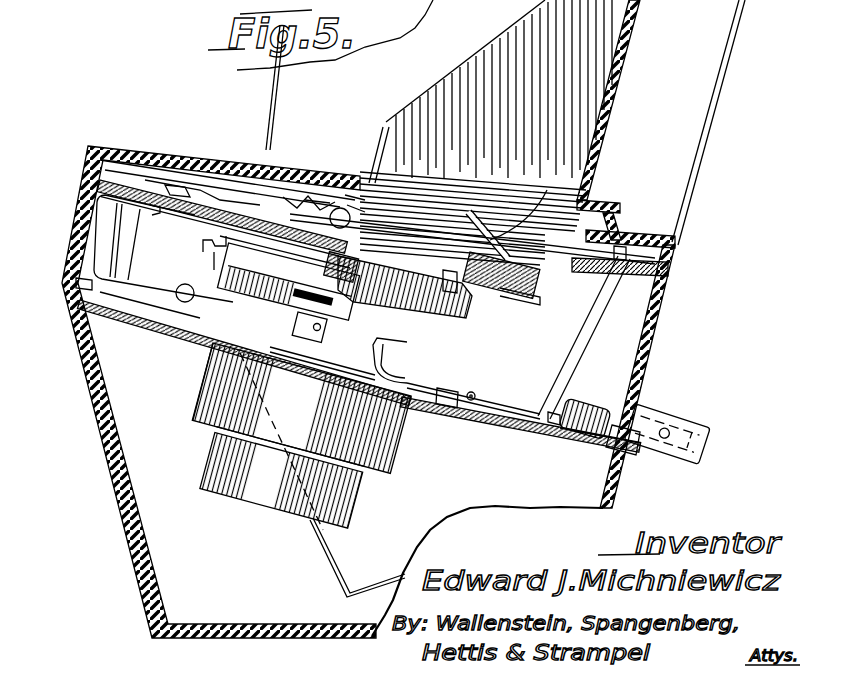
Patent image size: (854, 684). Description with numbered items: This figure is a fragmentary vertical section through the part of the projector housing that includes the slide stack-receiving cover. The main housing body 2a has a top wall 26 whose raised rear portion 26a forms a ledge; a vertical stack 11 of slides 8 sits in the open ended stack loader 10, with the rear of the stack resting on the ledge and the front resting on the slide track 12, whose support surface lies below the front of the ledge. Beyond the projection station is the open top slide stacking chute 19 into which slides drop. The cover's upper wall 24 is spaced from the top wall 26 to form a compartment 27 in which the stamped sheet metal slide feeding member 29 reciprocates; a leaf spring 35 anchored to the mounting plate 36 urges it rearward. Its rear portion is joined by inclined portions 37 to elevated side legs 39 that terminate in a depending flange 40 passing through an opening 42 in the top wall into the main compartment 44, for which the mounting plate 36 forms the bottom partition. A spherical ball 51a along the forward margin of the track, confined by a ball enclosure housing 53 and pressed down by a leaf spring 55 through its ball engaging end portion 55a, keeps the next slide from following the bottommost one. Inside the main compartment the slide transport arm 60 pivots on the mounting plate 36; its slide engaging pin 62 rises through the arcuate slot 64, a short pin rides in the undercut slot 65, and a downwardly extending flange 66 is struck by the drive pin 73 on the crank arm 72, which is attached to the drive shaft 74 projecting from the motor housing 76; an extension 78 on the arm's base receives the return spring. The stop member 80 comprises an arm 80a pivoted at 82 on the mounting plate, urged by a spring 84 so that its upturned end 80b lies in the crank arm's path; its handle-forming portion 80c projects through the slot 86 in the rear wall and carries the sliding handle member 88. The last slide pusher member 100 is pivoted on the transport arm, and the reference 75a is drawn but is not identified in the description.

The main housing body 2a is at (648, 369).
The slide 8 is at (529, 170).
The stack loader 10 is at (618, 97).
The vertical stack 11 is at (80, 170).
The slide track 12 is at (507, 300).
The slide stacking chute 19 is at (347, 560).
The upper wall 24 is at (264, 146).
The top wall 26 is at (226, 231).
The raised rear portion 26a is at (558, 280).
The compartment 27 is at (160, 175).
The slide feeding member 29 is at (621, 230).
The leaf spring 35 is at (582, 339).
The mounting plate 36 is at (168, 362).
The inclined portions 37 is at (549, 182).
The side legs 39 is at (235, 251).
The depending flange 40 is at (75, 283).
The opening 42 is at (185, 165).
The main compartment 44 is at (200, 242).
The spherical ball 51a is at (340, 197).
The ball enclosure housing 53 is at (353, 190).
The leaf spring 55 is at (303, 200).
The ball engaging end portion 55a is at (323, 197).
The slide transport arm 60 is at (157, 213).
The slide engaging pin 62 is at (482, 300).
The arcuate slot 64 is at (452, 296).
The undercut slot 65 is at (400, 306).
The downwardly extending flange 66 is at (455, 320).
The crank arm 72 is at (212, 271).
The drive pin 73 is at (247, 300).
The drive shaft 74 is at (282, 392).
The plunger rod 75a is at (163, 322).
The motor housing 76 is at (195, 402).
The extension 78 is at (194, 336).
The stop member 80 is at (433, 397).
The arm 80a is at (457, 384).
The upturned end 80b is at (388, 345).
The handle-forming portion 80c is at (600, 405).
The pivot 82 is at (546, 414).
The spring 84 is at (477, 395).
The slot 86 is at (633, 437).
The handle member 88 is at (703, 420).
The last slide pusher member 100 is at (285, 259).